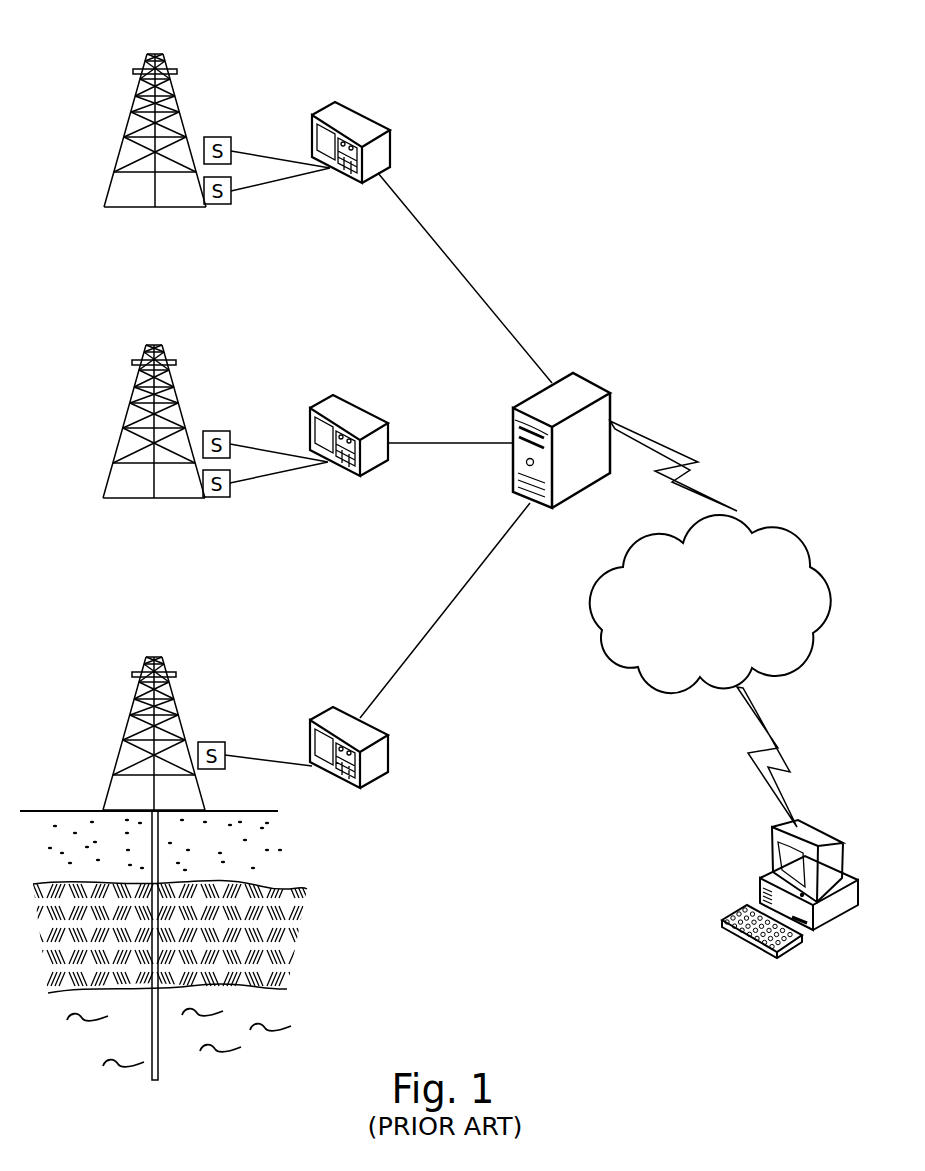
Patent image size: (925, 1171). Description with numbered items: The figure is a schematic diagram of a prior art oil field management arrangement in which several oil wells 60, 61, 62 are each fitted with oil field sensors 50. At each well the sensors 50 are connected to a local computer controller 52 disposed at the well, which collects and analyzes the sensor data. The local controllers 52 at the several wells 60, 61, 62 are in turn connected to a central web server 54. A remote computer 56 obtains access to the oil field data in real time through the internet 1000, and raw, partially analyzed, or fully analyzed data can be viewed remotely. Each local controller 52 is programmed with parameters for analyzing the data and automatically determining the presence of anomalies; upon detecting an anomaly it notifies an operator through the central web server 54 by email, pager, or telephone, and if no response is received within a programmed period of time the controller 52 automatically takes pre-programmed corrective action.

The oil field sensor 50 is at (217, 137).
The computer controller 52 is at (353, 122).
The central web server 54 is at (583, 393).
The remote computer 56 is at (783, 860).
The oil well 60 is at (108, 65).
The oil well 61 is at (110, 370).
The oil well 62 is at (115, 682).
The internet 1000 is at (770, 523).